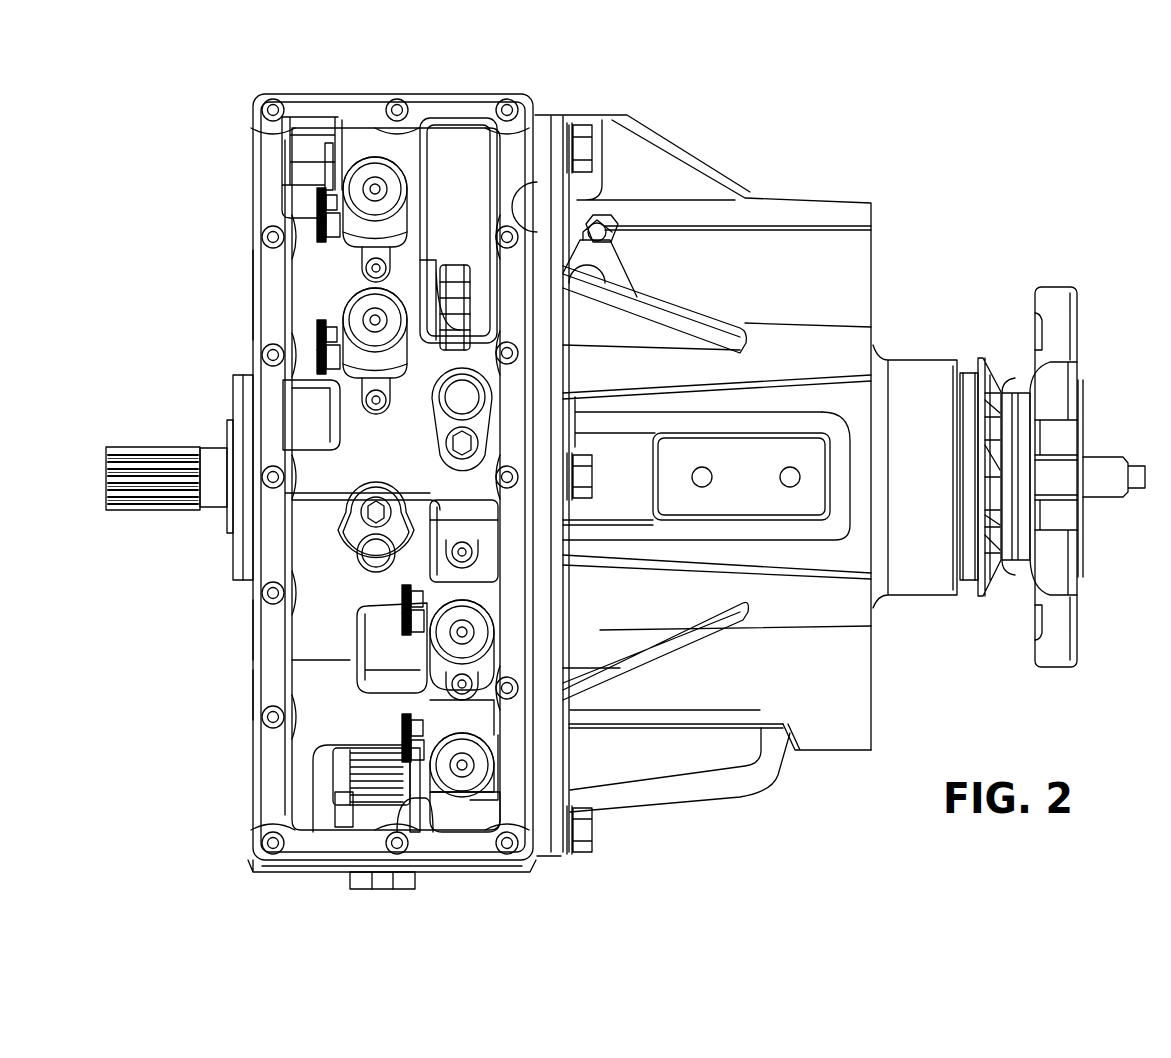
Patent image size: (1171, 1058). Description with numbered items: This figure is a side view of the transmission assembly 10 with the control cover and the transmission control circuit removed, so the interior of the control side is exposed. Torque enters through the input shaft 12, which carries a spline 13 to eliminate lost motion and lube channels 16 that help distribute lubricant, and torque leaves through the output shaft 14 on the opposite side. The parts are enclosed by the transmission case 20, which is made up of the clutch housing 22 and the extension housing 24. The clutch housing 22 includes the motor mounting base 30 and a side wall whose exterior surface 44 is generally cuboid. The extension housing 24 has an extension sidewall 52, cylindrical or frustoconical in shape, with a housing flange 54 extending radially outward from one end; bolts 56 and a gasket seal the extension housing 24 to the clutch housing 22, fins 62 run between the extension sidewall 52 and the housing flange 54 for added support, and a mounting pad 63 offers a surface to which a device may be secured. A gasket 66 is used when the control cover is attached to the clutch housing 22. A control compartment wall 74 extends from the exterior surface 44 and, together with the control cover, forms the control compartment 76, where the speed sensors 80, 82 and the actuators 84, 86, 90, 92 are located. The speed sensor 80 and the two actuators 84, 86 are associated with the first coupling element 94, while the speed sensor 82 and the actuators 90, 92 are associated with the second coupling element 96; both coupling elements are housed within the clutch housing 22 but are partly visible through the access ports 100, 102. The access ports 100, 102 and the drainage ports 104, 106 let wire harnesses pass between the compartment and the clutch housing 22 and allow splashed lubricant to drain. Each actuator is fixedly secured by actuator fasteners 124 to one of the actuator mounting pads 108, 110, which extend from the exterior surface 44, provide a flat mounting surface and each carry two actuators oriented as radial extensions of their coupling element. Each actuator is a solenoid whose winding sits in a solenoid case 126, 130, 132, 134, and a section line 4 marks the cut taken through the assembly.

The section line 4 is at (378, 85).
The transmission assembly 10 is at (940, 148).
The input shaft 12 is at (210, 502).
The spline 13 is at (140, 443).
The output shaft 14 is at (1105, 492).
The lube channels 16 is at (1057, 668).
The transmission case 20 is at (702, 800).
The clutch housing 22 is at (300, 95).
The extension housing 24 is at (800, 200).
The motor mounting base 30 is at (255, 300).
The exterior surface 44 is at (255, 632).
The extension sidewall 52 is at (822, 752).
The housing flange 54 is at (560, 858).
The bolts 56 is at (594, 145).
The fins 62 is at (665, 300).
The mounting pad 63 is at (760, 522).
The gasket 66 is at (255, 690).
The control compartment wall 74 is at (490, 875).
The control compartment 76 is at (338, 709).
The speed sensor 80 is at (357, 556).
The speed sensor 82 is at (480, 420).
The actuator 84 is at (352, 240).
The actuator 86 is at (345, 322).
The actuator 90 is at (472, 568).
The actuator 92 is at (498, 792).
The first coupling element 94 is at (345, 820).
The second coupling element 96 is at (430, 278).
The access port 100 is at (468, 300).
The access port 102 is at (367, 665).
The drainage port 104 is at (345, 835).
The drainage port 106 is at (283, 158).
The actuator mounting pad 108 is at (330, 430).
The actuator mounting pad 110 is at (545, 535).
The actuator fasteners 124 is at (365, 272).
The solenoid case 126 is at (400, 172).
The solenoid case 130 is at (355, 372).
The solenoid case 132 is at (487, 632).
The solenoid case 134 is at (497, 722).